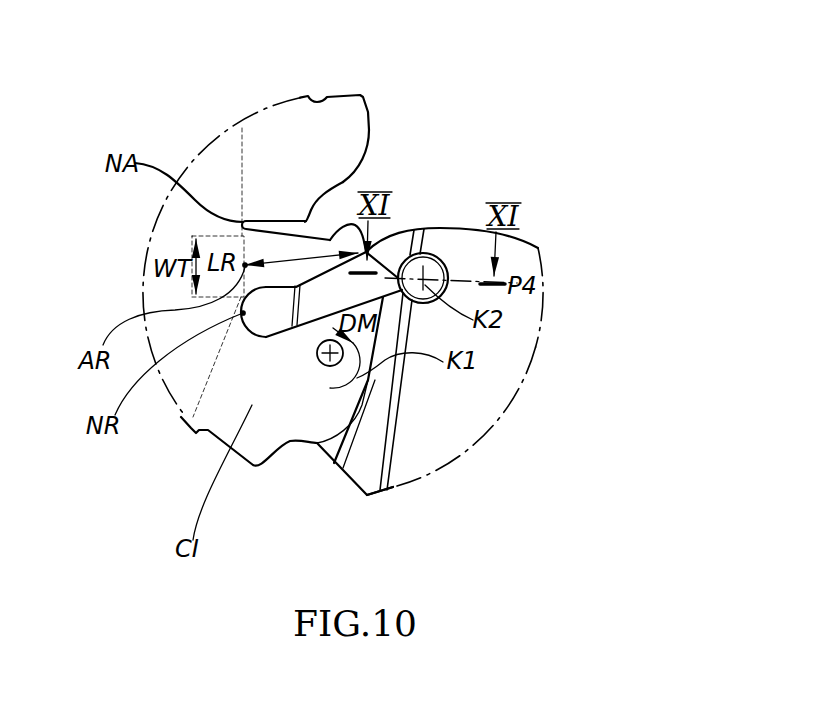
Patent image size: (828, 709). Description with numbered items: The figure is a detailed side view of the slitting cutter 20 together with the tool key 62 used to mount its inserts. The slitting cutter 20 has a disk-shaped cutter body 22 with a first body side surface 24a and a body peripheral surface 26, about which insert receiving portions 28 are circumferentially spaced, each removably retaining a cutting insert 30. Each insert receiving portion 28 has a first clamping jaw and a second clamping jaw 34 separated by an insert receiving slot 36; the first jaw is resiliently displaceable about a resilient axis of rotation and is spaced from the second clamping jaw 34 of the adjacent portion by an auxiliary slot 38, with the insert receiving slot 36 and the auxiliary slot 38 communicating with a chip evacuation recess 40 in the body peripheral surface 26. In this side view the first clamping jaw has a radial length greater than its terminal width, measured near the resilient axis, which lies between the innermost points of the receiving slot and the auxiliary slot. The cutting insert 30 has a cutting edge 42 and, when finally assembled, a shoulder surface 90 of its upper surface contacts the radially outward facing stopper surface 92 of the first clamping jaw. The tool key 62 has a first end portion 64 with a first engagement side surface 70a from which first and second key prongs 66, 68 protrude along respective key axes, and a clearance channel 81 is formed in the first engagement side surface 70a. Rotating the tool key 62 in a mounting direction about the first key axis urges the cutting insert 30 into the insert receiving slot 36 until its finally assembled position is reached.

The slitting cutter 20 is at (193, 149).
The cutter body 22 is at (186, 392).
The first body side surface 24a is at (298, 155).
The body peripheral surface 26 is at (369, 110).
The insert receiving portion 28 is at (288, 380).
The cutting insert 30 is at (348, 301).
The second clamping jaw 34 is at (283, 362).
The insert receiving slot 36 is at (272, 315).
The auxiliary slot 38 is at (283, 222).
The chip evacuation recess 40 is at (324, 202).
The cutting edge 42 is at (435, 252).
The tool key 62 is at (547, 347).
The first end portion 64 is at (527, 252).
The first key prong 66 is at (316, 389).
The second key prong 68 is at (443, 253).
The first engagement side surface 70a is at (456, 389).
The clearance channel 81 is at (374, 401).
The shoulder surface 90 is at (366, 250).
The stopper surface 92 is at (339, 229).